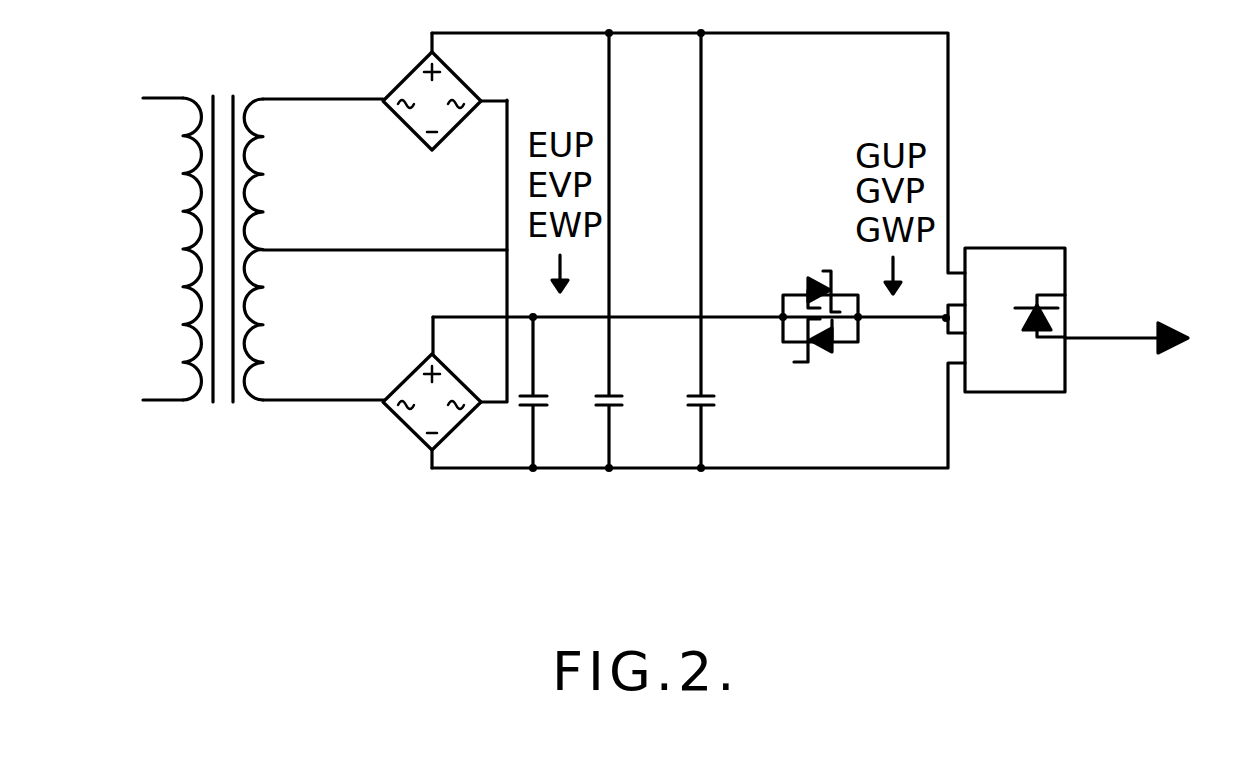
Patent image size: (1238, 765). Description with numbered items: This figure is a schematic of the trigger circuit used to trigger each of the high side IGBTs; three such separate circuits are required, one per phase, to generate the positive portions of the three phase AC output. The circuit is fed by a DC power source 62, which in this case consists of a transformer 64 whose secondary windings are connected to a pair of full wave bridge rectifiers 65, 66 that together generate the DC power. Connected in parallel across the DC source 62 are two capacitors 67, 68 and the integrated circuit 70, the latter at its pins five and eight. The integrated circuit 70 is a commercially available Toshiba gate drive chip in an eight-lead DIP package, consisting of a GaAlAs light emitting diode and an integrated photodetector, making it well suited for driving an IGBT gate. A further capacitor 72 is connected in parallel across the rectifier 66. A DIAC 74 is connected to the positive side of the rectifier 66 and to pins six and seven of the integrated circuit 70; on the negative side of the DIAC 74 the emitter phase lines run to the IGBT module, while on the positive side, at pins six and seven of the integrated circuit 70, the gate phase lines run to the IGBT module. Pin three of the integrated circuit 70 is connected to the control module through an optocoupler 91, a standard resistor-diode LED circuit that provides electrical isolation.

The DC power source 62 is at (308, 435).
The transformer 64 is at (187, 270).
The full wave bridge rectifier 65 is at (410, 133).
The full wave bridge rectifier 66 is at (411, 438).
The capacitor 67 is at (613, 407).
The capacitor 68 is at (712, 403).
The integrated circuit 70 is at (1038, 392).
The capacitor 72 is at (540, 405).
The DIAC 74 is at (800, 282).
The optocoupler 91 is at (1151, 338).